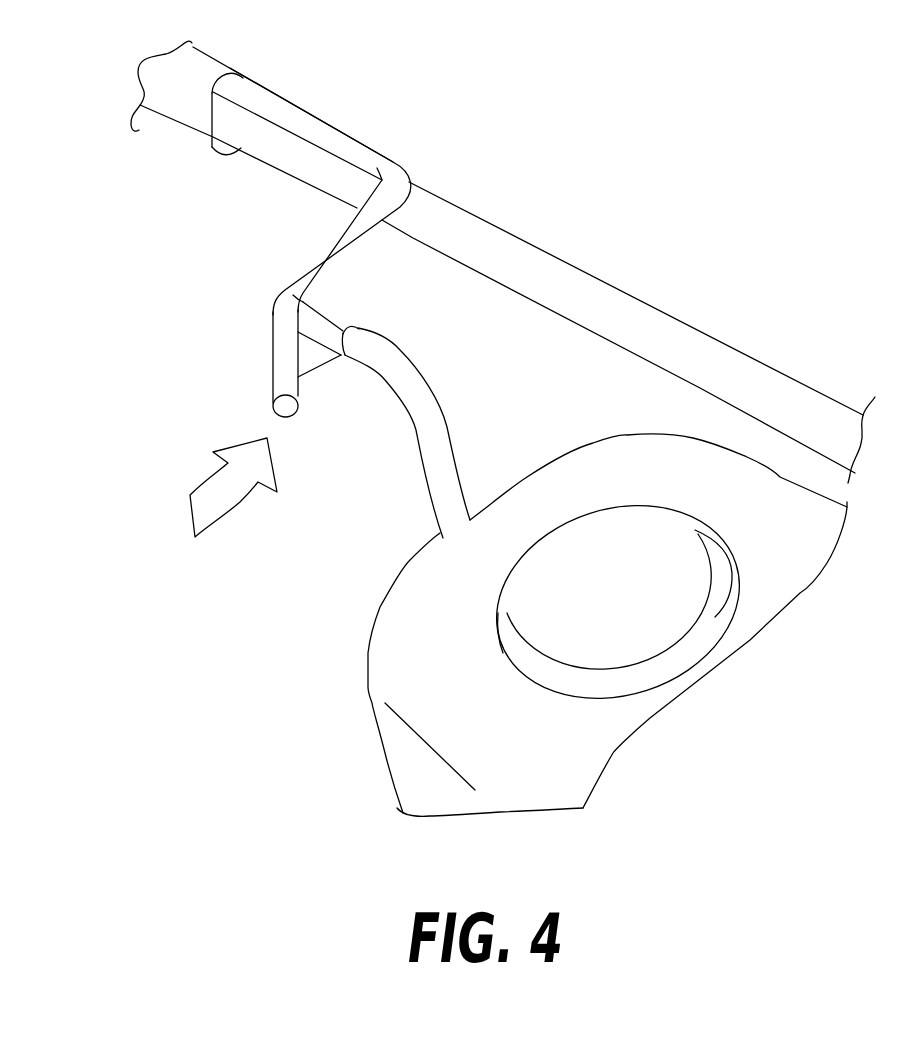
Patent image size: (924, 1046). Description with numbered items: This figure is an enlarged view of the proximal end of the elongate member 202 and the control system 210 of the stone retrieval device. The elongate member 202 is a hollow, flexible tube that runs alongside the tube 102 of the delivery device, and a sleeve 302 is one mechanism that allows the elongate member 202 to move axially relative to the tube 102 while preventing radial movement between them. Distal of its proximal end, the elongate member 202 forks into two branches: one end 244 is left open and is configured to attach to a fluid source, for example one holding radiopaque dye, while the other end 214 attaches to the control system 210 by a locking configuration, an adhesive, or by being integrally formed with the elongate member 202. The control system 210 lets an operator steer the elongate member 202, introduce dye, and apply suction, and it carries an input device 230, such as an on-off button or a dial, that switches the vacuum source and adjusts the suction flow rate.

The tube 102 is at (620, 290).
The elongate member 202 is at (316, 116).
The sleeve 302 is at (173, 130).
The second end 244 is at (273, 366).
The first end 214 is at (417, 433).
The control system 210 is at (368, 690).
The input device 230 is at (675, 595).